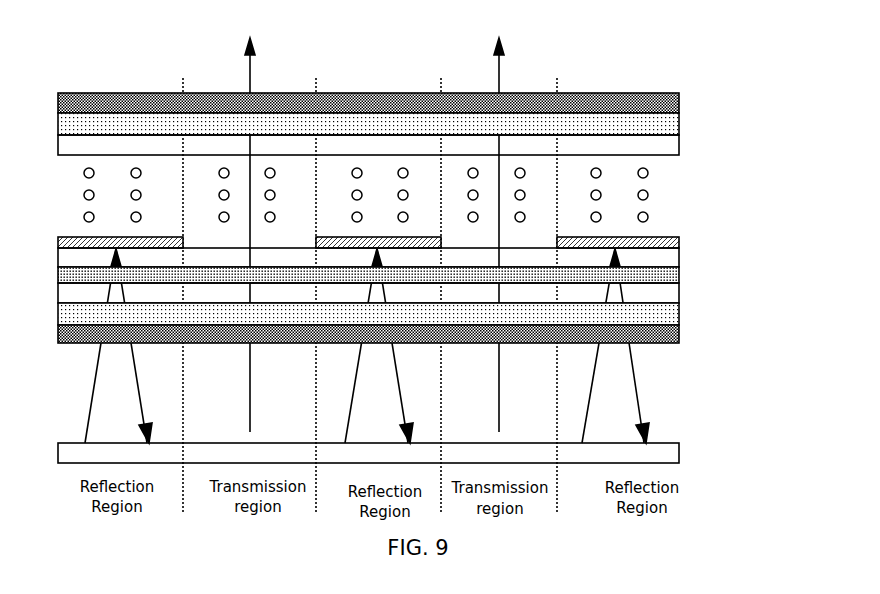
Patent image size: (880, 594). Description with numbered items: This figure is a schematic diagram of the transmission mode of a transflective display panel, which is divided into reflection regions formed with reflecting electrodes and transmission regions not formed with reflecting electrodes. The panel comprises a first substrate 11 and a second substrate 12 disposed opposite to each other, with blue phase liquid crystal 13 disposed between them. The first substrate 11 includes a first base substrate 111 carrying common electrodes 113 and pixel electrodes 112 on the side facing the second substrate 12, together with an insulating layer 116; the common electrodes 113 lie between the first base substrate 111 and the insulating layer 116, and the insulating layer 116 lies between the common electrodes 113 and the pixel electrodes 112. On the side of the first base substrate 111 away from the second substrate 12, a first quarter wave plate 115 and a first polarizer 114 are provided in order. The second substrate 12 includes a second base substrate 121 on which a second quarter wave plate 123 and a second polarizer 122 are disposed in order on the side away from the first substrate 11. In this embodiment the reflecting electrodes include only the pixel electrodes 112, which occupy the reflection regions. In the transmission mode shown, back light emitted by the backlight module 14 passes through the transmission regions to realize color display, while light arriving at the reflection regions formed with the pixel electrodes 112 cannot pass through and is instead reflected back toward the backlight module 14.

The first substrate 11 is at (419, 278).
The first base substrate 111 is at (650, 300).
The pixel electrodes 112 is at (650, 245).
The common electrodes 113 is at (652, 280).
The first polarizer 114 is at (402, 338).
The first quarter wave plate 115 is at (658, 318).
The insulating layer 116 is at (652, 262).
The second substrate 12 is at (414, 116).
The second base substrate 121 is at (655, 152).
The second polarizer 122 is at (655, 109).
The second quarter wave plate 123 is at (655, 130).
The blue phase liquid crystal 13 is at (645, 194).
The backlight module 14 is at (655, 459).